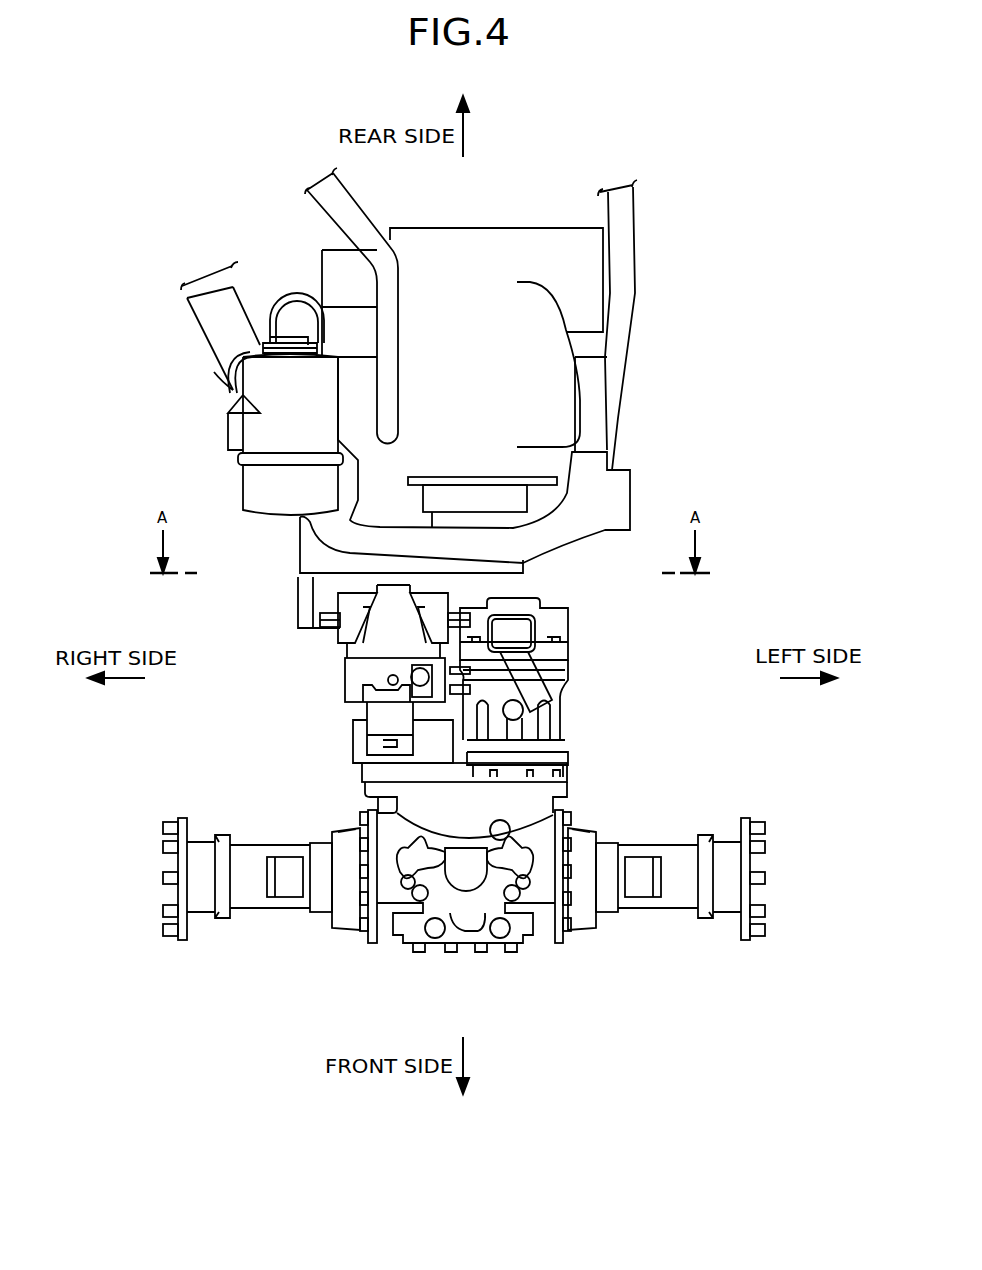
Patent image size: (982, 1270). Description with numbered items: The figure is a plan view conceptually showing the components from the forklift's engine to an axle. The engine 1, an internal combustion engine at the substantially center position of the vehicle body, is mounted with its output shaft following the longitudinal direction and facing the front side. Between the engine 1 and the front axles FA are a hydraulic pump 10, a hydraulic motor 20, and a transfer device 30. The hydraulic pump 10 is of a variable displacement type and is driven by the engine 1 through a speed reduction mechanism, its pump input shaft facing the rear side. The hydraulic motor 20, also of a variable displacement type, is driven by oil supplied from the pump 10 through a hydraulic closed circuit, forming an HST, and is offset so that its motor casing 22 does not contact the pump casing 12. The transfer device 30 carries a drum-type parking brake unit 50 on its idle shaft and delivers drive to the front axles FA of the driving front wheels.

The engine 1 is at (487, 275).
The hydraulic pump 10 is at (352, 678).
The pump casing 12 is at (343, 690).
The hydraulic motor 20 is at (557, 707).
The motor casing 22 is at (565, 718).
The transfer device 30 is at (465, 923).
The parking brake unit 50 is at (357, 738).
The front axles FA is at (265, 908).